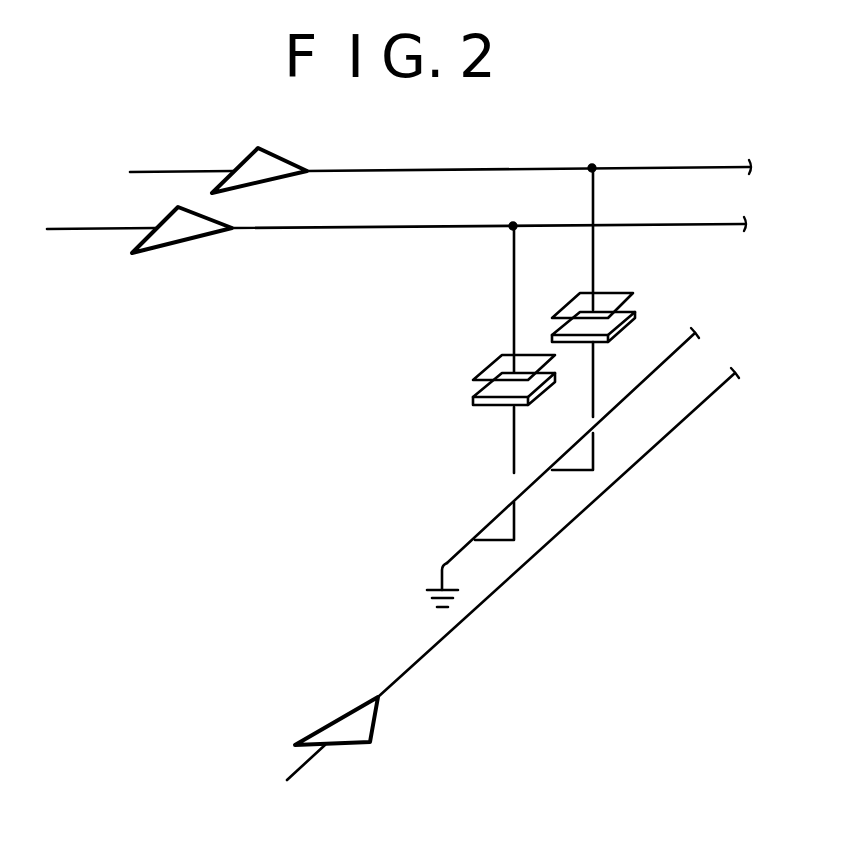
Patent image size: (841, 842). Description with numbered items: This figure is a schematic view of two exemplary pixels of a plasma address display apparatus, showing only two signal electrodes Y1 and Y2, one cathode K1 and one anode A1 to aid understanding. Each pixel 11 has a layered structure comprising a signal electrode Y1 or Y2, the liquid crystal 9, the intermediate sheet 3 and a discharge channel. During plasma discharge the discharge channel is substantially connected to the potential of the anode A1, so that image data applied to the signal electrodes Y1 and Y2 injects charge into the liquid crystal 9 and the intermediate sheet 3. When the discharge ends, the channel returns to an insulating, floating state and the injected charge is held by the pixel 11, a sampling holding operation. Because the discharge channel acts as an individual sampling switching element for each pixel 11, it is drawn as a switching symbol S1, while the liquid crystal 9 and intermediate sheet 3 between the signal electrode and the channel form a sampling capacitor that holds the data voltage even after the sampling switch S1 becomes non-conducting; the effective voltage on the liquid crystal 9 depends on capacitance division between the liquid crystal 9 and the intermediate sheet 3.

The pixel 11 is at (639, 279).
The liquid crystal 9 is at (630, 313).
The intermediate sheet 3 is at (620, 331).
The signal electrode Y1 is at (573, 312).
The signal electrode Y2 is at (498, 372).
The sampling switch S1 is at (590, 429).
The cathode K1 is at (513, 554).
The anode A1 is at (426, 583).